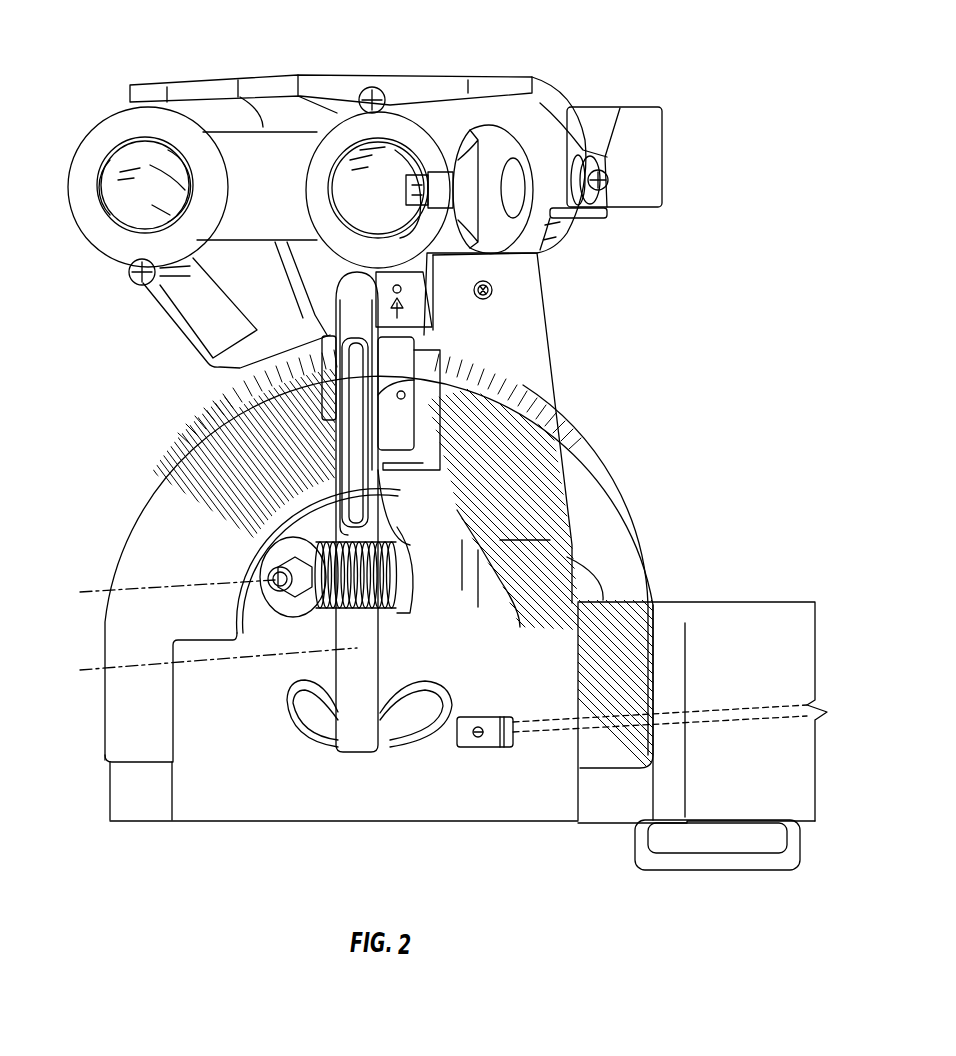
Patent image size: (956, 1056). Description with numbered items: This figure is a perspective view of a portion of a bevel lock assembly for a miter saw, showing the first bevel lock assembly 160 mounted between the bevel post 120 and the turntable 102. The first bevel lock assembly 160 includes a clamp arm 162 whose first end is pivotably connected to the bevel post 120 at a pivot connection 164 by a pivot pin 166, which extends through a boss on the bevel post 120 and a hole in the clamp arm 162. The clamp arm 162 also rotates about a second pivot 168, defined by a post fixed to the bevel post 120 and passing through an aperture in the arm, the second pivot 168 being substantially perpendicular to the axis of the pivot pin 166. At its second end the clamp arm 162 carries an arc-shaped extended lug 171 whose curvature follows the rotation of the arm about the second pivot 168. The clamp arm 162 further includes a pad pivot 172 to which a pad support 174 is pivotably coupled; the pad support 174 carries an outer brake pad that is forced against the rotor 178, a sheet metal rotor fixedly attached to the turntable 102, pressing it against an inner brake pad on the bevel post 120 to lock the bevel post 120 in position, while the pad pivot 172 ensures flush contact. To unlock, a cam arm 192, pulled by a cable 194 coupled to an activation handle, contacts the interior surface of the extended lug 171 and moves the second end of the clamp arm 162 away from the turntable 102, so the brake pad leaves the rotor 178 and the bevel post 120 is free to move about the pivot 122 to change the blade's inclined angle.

The turntable 102 is at (795, 790).
The bevel post 120 is at (512, 104).
The pivot 122 is at (160, 667).
The first bevel lock assembly 160 is at (270, 828).
The clamp arm 162 is at (275, 512).
The pivot connection 164 is at (413, 313).
The pivot pin 166 is at (493, 291).
The second pivot 168 is at (160, 590).
The extended lug 171 is at (403, 716).
The pad pivot 172 is at (327, 392).
The pad support 174 is at (330, 360).
The rotor 178 is at (162, 567).
The cam arm 192 is at (463, 740).
The cable 194 is at (713, 710).